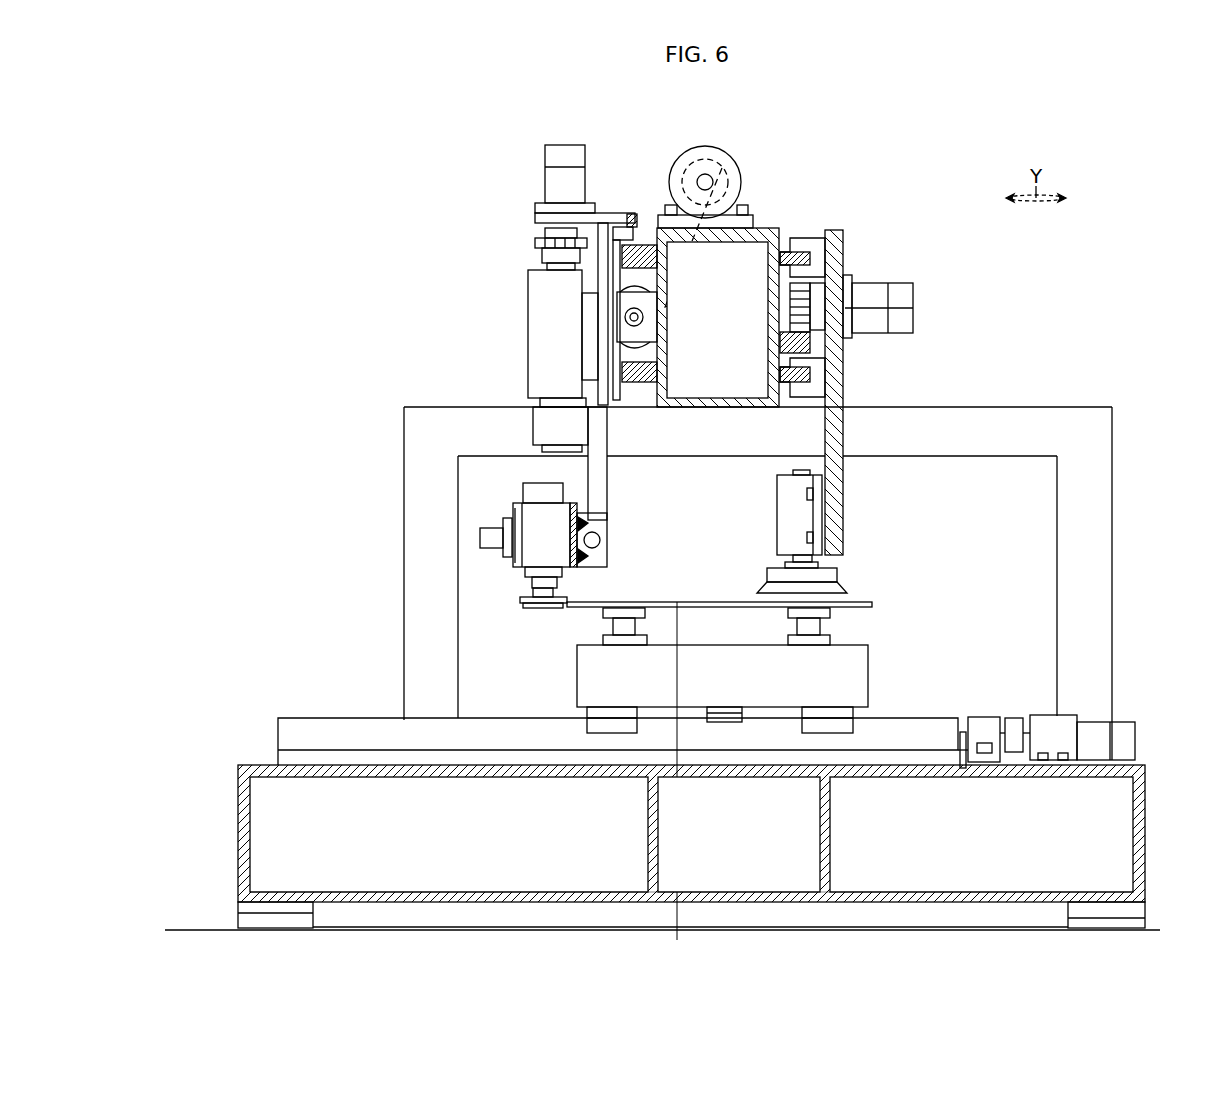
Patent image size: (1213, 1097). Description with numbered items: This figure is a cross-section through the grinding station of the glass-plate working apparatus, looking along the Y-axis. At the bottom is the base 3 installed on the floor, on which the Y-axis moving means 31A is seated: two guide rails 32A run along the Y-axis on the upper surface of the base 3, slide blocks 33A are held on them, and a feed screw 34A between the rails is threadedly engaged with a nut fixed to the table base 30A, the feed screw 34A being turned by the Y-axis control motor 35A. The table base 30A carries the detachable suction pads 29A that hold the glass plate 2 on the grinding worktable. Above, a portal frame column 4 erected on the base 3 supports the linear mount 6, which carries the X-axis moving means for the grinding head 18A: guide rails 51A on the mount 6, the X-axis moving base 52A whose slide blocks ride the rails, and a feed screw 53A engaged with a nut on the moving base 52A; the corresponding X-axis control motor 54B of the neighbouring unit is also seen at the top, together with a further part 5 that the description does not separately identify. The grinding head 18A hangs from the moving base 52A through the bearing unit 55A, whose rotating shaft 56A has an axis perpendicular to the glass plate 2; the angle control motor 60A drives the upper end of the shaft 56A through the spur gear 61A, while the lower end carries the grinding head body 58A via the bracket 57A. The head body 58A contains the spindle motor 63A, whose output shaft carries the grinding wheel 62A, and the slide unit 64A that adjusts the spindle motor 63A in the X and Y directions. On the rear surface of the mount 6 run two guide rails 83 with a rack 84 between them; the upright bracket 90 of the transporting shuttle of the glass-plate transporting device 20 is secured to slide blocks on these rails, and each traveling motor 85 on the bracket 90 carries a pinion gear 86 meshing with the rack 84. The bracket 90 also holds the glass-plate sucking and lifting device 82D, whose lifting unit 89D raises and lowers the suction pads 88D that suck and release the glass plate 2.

The glass plate 2 is at (691, 928).
The base 3 is at (1030, 762).
The portal frame column 4 is at (1078, 432).
The spindle 5 is at (613, 348).
The linear mount 6 is at (745, 268).
The grinding head 18A is at (523, 360).
The glass-plate transporting device 20 is at (913, 308).
The suction pad 29A is at (603, 618).
The table base 30A is at (838, 680).
The Y-axis moving means 31A is at (962, 770).
The guide rail 32A is at (718, 738).
The slide block 33A is at (610, 725).
The feed screw 34A is at (957, 723).
The Y-axis control motor 35A is at (1058, 737).
The guide rail 51A is at (632, 238).
The X-axis moving base 52A is at (608, 217).
The feed screw 53A is at (620, 315).
The X-axis control motor 54B is at (730, 160).
The bearing unit 55A is at (530, 270).
The rotating shaft 56A is at (535, 400).
The bracket 57A is at (597, 425).
The grinding head body 58A is at (532, 550).
The angle control motor 60A is at (564, 158).
The spur gear 61A is at (540, 243).
The grinding wheel 62A is at (537, 613).
The spindle motor 63A is at (540, 528).
The slide unit 64A is at (513, 513).
The glass-plate sucking and lifting device 82D is at (792, 503).
The guide rail 83 is at (803, 240).
The rack 84 is at (803, 337).
The traveling motor 85 is at (872, 298).
The pinion gear 86 is at (800, 297).
The suction pad 88D is at (840, 582).
The lifting unit 89D is at (798, 515).
The bracket 90 is at (833, 466).